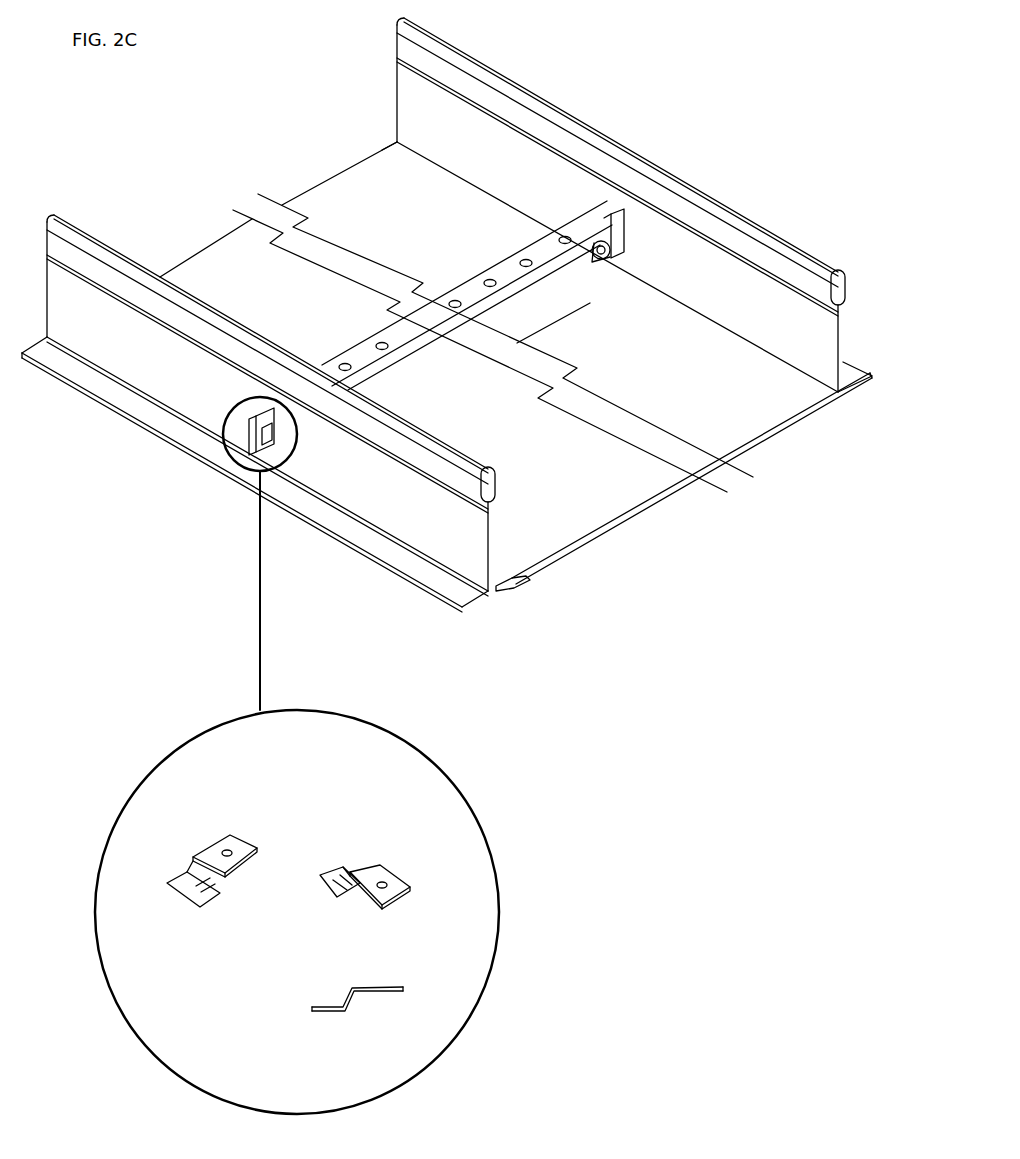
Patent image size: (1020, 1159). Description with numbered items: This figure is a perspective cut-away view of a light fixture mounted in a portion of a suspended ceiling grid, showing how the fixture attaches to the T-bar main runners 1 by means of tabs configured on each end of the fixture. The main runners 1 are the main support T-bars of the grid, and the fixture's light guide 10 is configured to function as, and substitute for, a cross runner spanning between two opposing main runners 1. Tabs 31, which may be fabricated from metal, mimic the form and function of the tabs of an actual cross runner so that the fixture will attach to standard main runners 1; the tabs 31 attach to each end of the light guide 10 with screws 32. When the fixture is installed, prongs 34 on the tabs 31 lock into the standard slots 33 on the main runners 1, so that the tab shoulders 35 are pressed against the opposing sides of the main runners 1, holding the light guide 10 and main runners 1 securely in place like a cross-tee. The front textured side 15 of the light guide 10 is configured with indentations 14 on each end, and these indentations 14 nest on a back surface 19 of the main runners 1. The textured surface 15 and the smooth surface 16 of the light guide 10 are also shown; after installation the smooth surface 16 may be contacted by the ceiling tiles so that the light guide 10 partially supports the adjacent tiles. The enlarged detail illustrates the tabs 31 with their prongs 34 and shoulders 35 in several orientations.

The main runner 1 is at (478, 550).
The light guide 10 is at (566, 278).
The indentation 14 is at (520, 568).
The front textured side 15 is at (582, 546).
The smooth surface 16 is at (578, 530).
The back surface 19 is at (460, 594).
The tab 31 is at (580, 213).
The screw 32 is at (612, 253).
The slot 33 is at (612, 215).
The prong 34 is at (288, 448).
The tab shoulder 35 is at (616, 220).